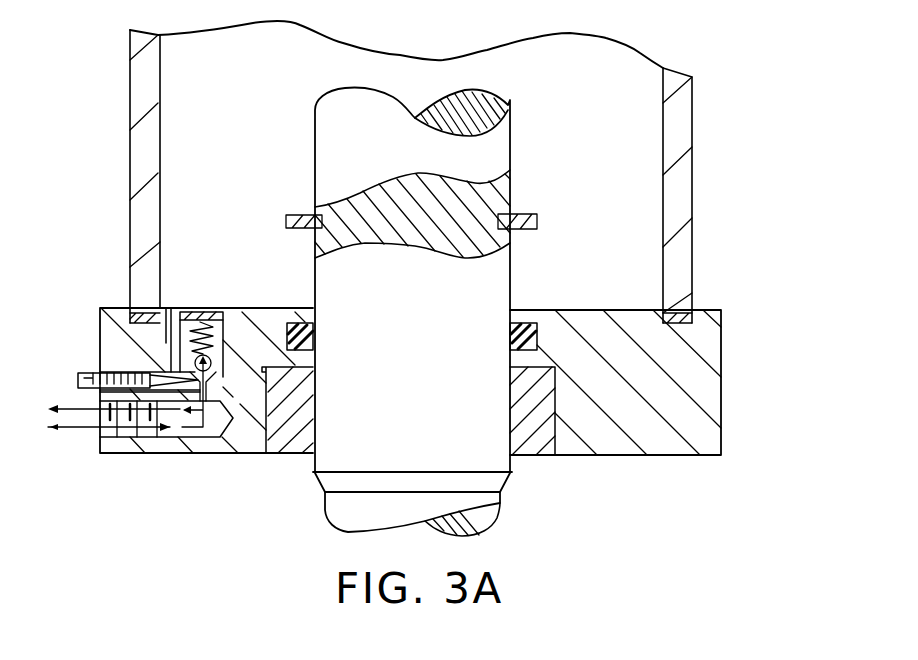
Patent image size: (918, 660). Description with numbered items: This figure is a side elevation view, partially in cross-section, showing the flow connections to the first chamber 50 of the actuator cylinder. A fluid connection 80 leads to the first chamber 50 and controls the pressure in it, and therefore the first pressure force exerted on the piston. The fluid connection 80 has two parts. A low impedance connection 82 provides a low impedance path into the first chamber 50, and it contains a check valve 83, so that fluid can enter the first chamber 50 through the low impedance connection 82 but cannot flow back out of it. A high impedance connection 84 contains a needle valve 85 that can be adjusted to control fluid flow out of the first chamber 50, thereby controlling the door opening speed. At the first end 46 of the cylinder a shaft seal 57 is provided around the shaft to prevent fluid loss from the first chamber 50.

The first end 46 is at (712, 403).
The first chamber 50 is at (256, 177).
The shaft seal 57 is at (537, 340).
The fluid connection 80 is at (162, 312).
The low impedance connection 82 is at (70, 428).
The check valve 83 is at (217, 362).
The high impedance connection 84 is at (167, 264).
The needle valve 85 is at (93, 371).